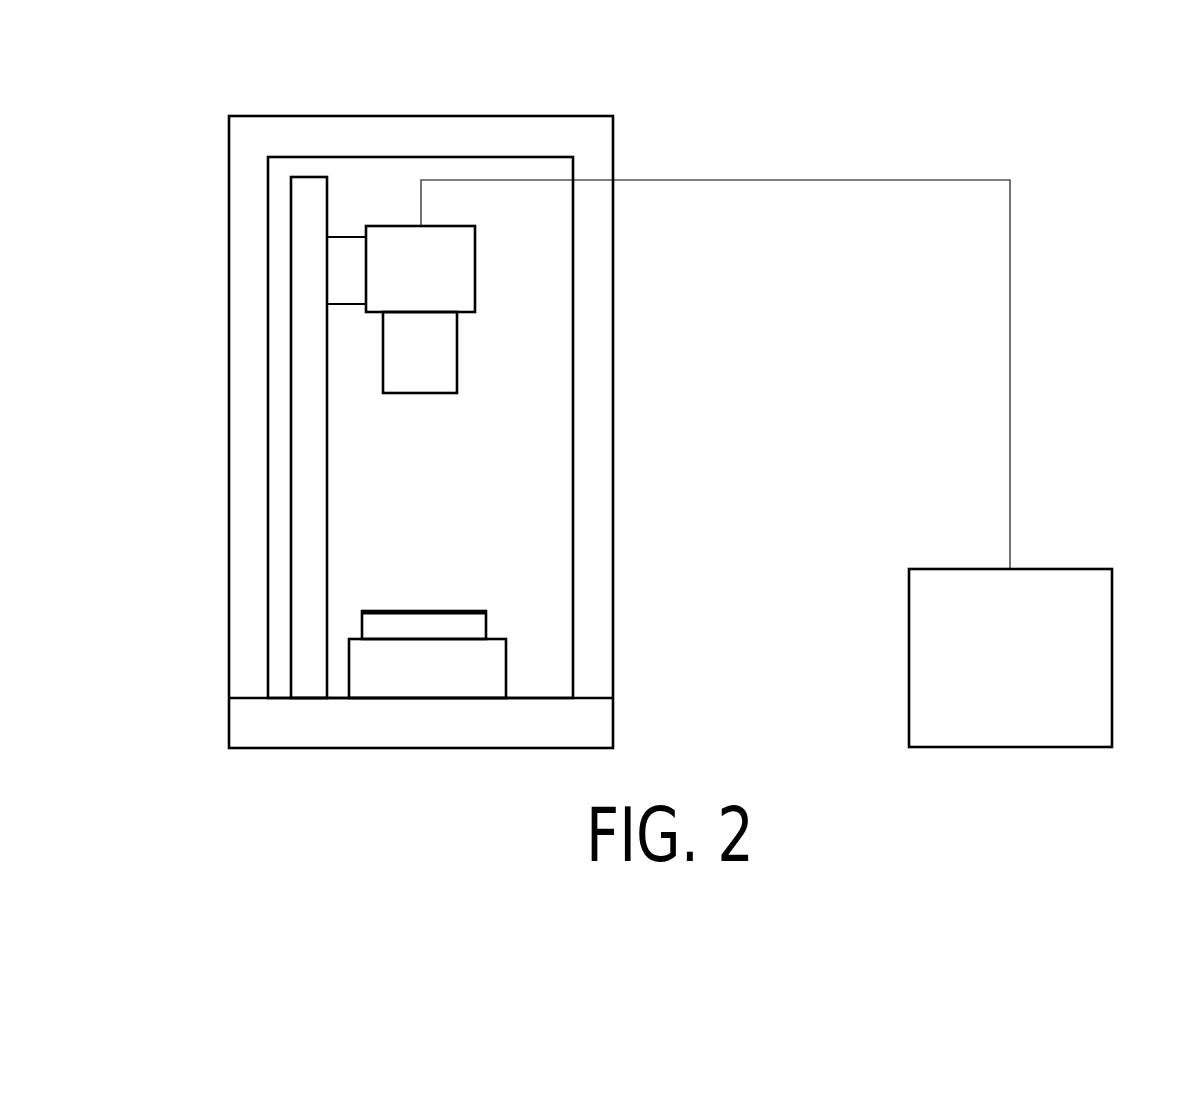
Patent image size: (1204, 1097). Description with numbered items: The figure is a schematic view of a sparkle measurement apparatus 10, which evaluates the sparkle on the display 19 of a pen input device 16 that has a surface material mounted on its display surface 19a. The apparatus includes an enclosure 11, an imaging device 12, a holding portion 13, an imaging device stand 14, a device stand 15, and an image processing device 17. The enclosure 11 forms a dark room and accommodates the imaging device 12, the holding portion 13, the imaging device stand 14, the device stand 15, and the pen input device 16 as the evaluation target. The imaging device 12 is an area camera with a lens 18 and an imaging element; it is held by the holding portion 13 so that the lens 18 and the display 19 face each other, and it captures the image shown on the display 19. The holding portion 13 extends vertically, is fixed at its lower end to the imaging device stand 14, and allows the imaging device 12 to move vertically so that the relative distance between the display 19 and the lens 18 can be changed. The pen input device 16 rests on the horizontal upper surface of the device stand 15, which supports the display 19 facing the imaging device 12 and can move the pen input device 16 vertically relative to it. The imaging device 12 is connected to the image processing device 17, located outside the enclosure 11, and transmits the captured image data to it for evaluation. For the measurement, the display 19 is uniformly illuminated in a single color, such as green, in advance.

The sparkle measurement apparatus 10 is at (1099, 54).
The enclosure 11 is at (229, 318).
The imaging device 12 is at (475, 265).
The holding portion 13 is at (292, 442).
The imaging device stand 14 is at (229, 725).
The device stand 15 is at (506, 663).
The pen input device 16 is at (487, 620).
The image processing device 17 is at (1112, 655).
The lens 18 is at (457, 350).
The display 19 is at (487, 611).
The display surface 19a is at (455, 611).